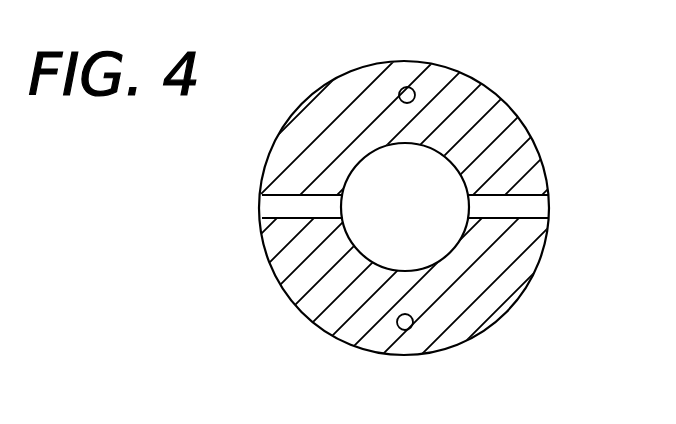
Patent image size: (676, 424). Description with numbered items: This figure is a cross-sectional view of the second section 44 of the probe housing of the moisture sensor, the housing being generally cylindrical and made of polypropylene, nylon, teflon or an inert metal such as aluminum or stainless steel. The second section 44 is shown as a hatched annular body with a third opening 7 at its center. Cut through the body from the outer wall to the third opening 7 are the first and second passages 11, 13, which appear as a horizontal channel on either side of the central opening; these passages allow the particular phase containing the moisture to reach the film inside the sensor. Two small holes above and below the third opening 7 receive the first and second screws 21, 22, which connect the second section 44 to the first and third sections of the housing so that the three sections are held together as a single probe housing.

The third opening 7 is at (447, 168).
The first passage 11 is at (543, 208).
The second passage 13 is at (268, 205).
The first screw 21 is at (413, 87).
The second screw 22 is at (412, 327).
The second section 44 is at (303, 313).